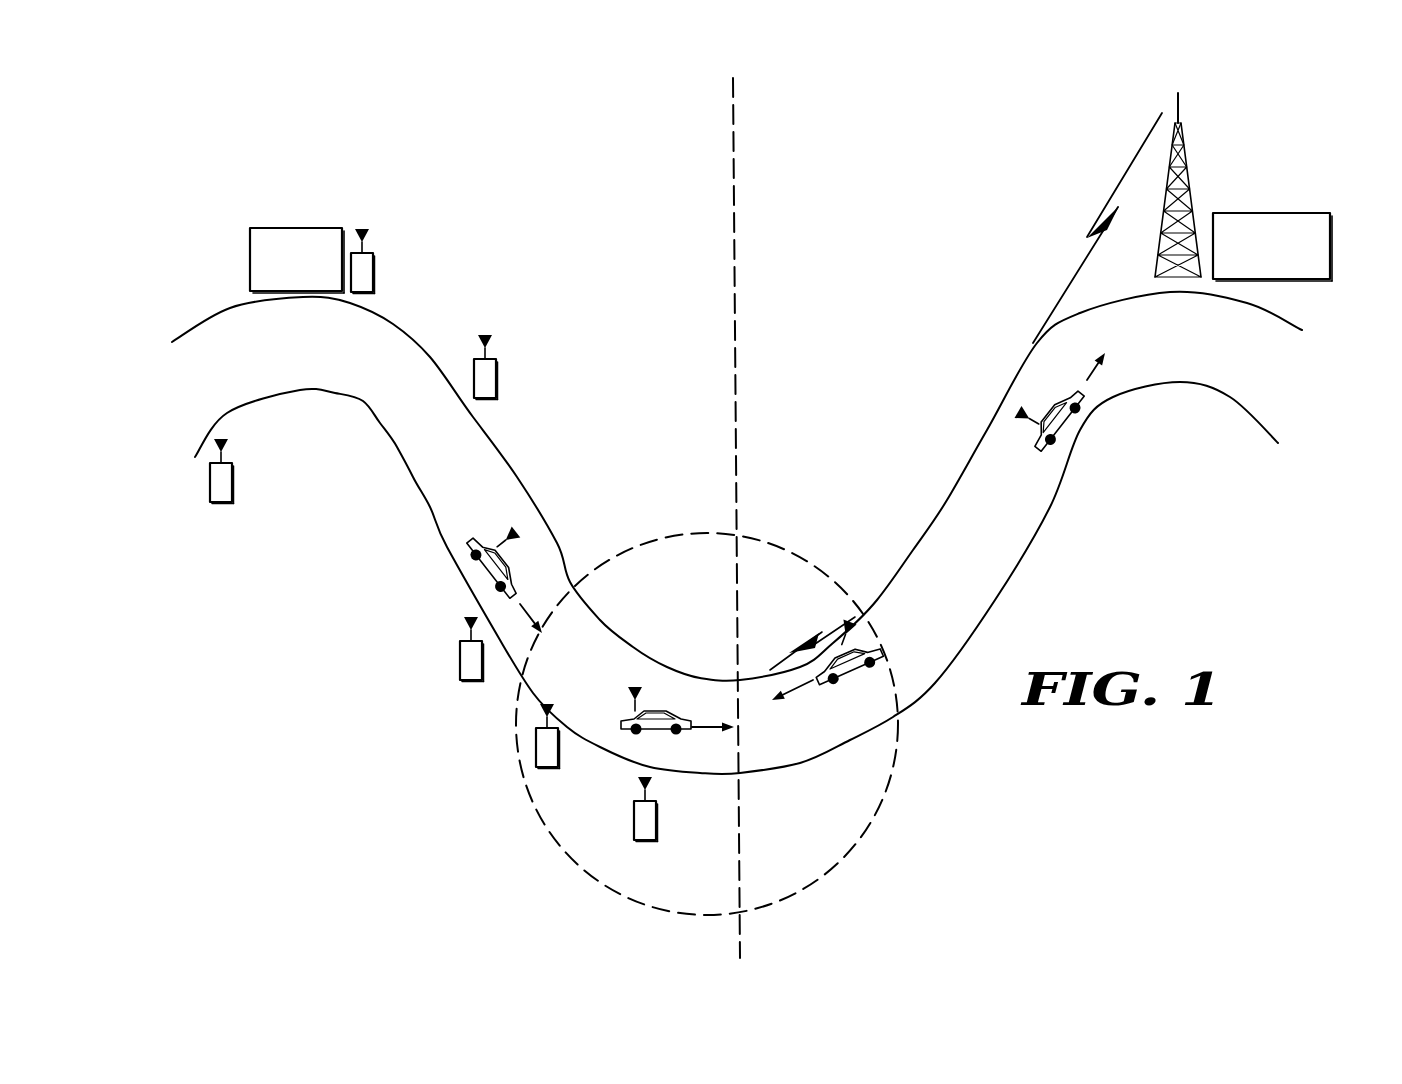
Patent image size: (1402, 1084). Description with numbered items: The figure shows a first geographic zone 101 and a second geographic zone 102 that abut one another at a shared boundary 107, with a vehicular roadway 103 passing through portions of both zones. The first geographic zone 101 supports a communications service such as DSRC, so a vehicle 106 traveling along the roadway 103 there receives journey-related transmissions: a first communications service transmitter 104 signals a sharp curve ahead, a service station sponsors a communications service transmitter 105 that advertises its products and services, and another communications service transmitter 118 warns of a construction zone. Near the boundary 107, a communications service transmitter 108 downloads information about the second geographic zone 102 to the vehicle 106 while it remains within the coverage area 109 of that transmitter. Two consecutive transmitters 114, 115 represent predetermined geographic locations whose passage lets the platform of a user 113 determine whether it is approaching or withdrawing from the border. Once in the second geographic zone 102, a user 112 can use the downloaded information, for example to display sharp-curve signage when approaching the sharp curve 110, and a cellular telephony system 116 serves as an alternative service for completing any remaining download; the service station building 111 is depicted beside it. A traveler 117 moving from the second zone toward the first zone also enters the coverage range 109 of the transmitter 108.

The first geographic zone 101 is at (713, 230).
The second geographic zone 102 is at (786, 230).
The vehicular roadway 103 is at (358, 393).
The first communications service transmitter 104 is at (209, 488).
The communications service transmitter 105 is at (374, 267).
The vehicle 106 is at (662, 713).
The shared boundary 107 is at (739, 440).
The communications service transmitter 108 is at (641, 841).
The coverage area 109 is at (860, 841).
The sharp curve 110 is at (1150, 436).
The service station 111 is at (1333, 250).
The user 112 is at (1040, 444).
The user 113 is at (510, 567).
The communications service transmitter 114 is at (471, 683).
The transmitter 115 is at (548, 768).
The cellular telephony system 116 is at (1192, 166).
The traveler 117 is at (832, 685).
The communications service transmitter 118 is at (491, 398).